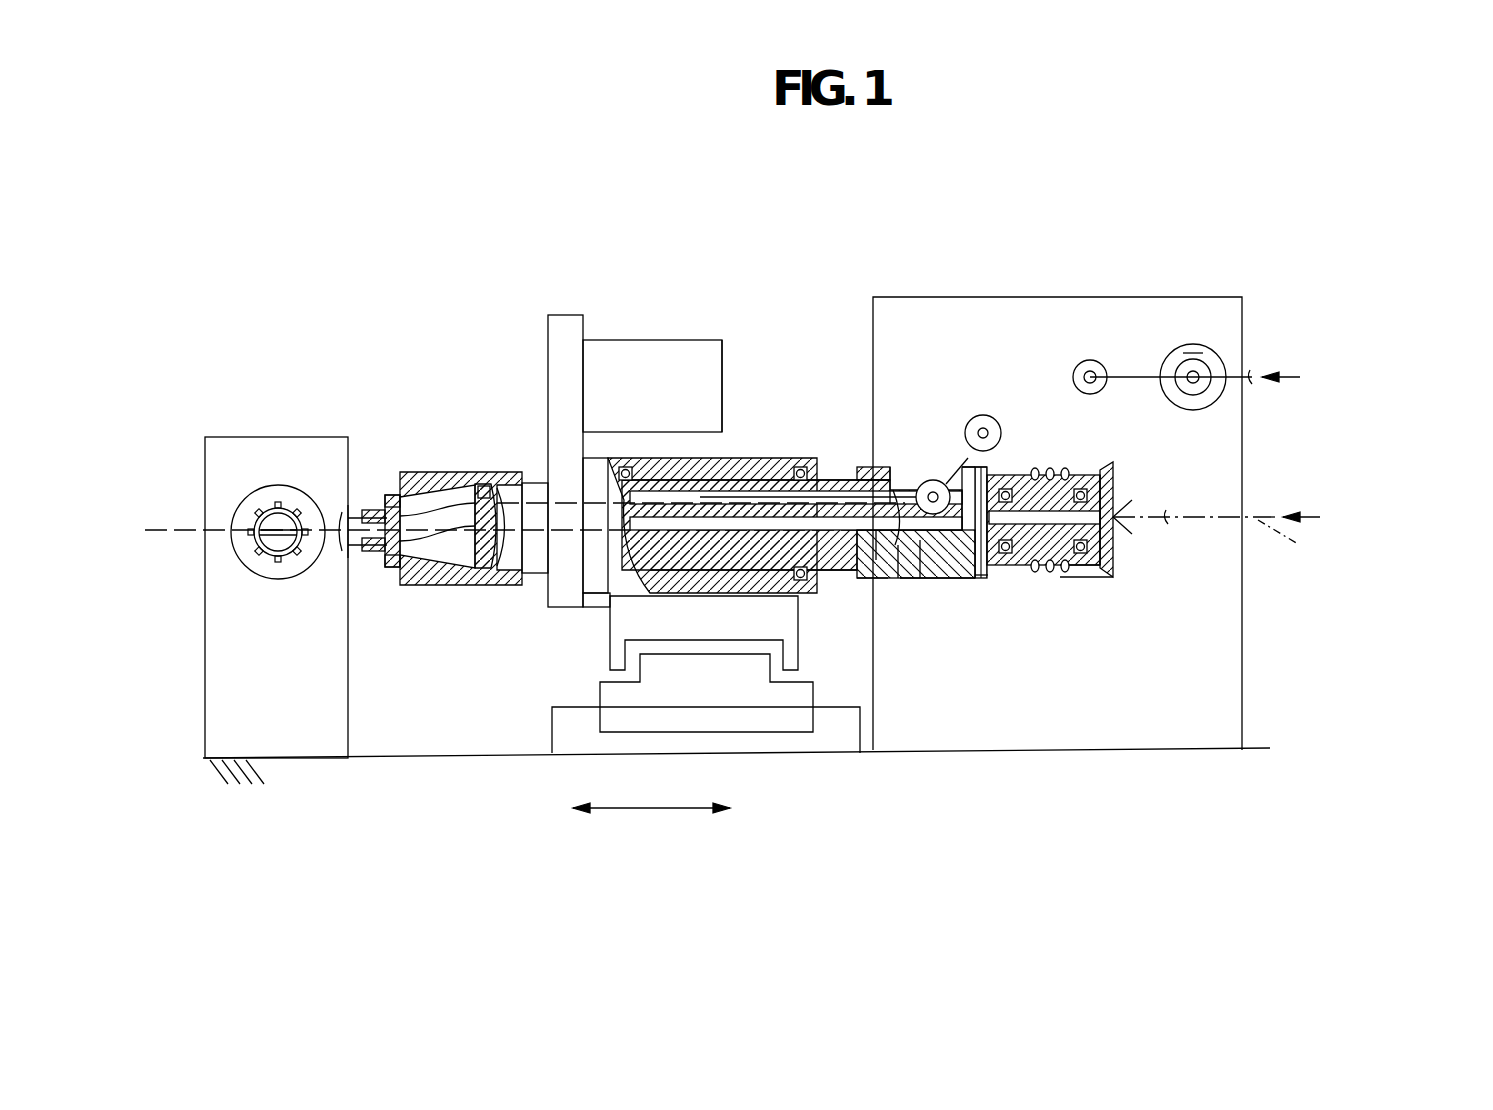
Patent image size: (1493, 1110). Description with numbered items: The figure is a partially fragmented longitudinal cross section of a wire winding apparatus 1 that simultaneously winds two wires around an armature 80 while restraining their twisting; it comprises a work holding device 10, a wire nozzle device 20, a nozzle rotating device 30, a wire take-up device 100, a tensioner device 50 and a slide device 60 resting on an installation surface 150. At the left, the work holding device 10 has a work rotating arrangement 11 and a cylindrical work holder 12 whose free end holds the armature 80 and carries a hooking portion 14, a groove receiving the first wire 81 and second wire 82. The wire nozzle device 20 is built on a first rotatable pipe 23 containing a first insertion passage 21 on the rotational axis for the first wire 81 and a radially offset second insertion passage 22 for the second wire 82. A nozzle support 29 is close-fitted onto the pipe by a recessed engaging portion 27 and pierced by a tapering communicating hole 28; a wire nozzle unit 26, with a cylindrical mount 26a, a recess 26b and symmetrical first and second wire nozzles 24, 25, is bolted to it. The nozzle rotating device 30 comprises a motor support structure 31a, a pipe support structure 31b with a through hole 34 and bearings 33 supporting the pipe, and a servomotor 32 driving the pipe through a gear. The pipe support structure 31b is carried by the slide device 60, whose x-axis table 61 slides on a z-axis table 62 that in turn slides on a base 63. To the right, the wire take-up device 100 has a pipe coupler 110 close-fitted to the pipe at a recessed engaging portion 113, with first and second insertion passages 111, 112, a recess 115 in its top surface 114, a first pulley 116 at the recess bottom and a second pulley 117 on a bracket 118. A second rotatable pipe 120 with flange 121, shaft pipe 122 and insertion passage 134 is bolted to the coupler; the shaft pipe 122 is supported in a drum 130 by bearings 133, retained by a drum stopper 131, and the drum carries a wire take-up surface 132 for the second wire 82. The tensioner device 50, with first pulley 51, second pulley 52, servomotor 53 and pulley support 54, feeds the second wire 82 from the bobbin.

The wire winding apparatus 1 is at (681, 215).
The work holding device 10 is at (262, 386).
The work rotating arrangement 11 is at (271, 485).
The work holder 12 is at (262, 520).
The hooking portion 14 is at (260, 541).
The wire nozzle device 20 is at (518, 373).
The first insertion passage 21 is at (868, 508).
The second insertion passage 22 is at (800, 468).
The first rotatable pipe 23 is at (513, 480).
The first wire nozzle 24 is at (372, 552).
The second wire nozzle 25 is at (372, 510).
The wire nozzle unit 26 is at (396, 500).
The cylindrical mount 26a is at (396, 562).
The recess 26b is at (390, 497).
The recessed engaging portion 27 is at (484, 483).
The communicating hole 28 is at (455, 584).
The nozzle support 29 is at (472, 480).
The nozzle rotating device 30 is at (608, 294).
The motor support structure 31a is at (583, 328).
The pipe support structure 31b is at (724, 458).
The servomotor 32 is at (686, 341).
The bearings 33 is at (752, 492).
The through hole 34 is at (742, 462).
The tensioner device 50 is at (1250, 226).
The first pulley 51 is at (1090, 358).
The second pulley 52 is at (1175, 360).
The servomotor 53 is at (1193, 343).
The pulley support 54 is at (1213, 352).
The slide device 60 is at (526, 615).
The x-axis table 61 is at (612, 612).
The z-axis table 62 is at (605, 700).
The base 63 is at (577, 727).
The armature 80 is at (262, 549).
The first wire 81 is at (352, 545).
The second wire 82 is at (349, 520).
The wire take-up device 100 is at (1095, 818).
The pipe coupler 110 is at (957, 580).
The first insertion passage 111 is at (920, 560).
The second insertion passage 112 is at (900, 560).
The recessed engaging portion 113 is at (868, 582).
The top surface 114 is at (985, 465).
The recess 115 is at (880, 520).
The first pulley 116 is at (933, 479).
The second pulley 117 is at (978, 462).
The bracket 118 is at (983, 414).
The second rotatable pipe 120 is at (981, 580).
The flange 121 is at (1045, 468).
The shaft pipe 122 is at (1103, 556).
The drum 130 is at (1012, 568).
The drum stopper 131 is at (1095, 470).
The wire take-up surface 132 is at (1103, 463).
The bearings 133 is at (1082, 568).
The insertion passage 134 is at (1115, 516).
The installation surface 150 is at (452, 750).